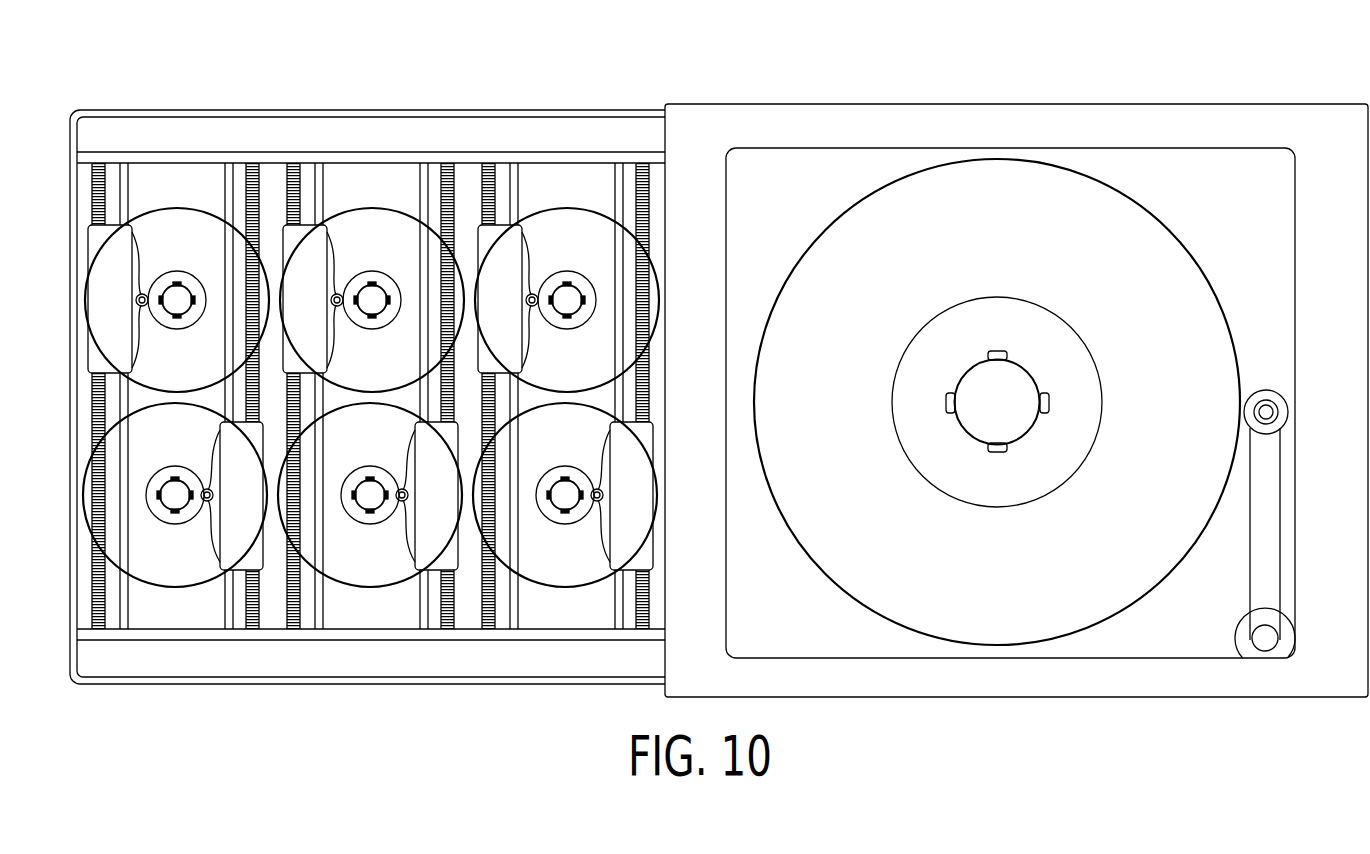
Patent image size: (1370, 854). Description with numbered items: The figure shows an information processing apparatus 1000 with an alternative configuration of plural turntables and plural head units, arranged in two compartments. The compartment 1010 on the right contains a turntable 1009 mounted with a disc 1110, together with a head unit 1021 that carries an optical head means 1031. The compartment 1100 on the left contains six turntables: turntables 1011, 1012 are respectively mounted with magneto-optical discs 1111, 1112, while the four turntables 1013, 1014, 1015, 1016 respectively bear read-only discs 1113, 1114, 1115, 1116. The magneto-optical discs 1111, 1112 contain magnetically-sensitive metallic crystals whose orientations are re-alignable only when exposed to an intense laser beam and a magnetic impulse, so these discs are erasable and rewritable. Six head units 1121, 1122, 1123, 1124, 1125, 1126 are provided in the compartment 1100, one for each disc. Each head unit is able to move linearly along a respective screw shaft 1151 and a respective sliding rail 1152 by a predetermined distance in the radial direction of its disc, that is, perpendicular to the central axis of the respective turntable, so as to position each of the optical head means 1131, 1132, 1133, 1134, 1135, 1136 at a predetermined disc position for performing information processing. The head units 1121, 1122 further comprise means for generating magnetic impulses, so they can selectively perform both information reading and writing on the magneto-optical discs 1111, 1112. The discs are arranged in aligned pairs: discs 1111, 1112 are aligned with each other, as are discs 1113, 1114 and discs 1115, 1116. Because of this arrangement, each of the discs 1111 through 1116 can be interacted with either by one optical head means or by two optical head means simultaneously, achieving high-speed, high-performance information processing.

The information processing apparatus 1000 is at (719, 348).
The compartment 1100 is at (390, 371).
The compartment 1010 is at (1016, 378).
The disc 1110 is at (1170, 230).
The turntable 1009 is at (1019, 360).
The optical head means 1031 is at (1270, 390).
The head unit 1021 is at (1243, 550).
The magneto-optical disc 1111 is at (188, 210).
The magneto-optical disc 1112 is at (150, 587).
The read-only disc 1113 is at (383, 210).
The read-only disc 1114 is at (345, 587).
The read-only disc 1115 is at (578, 210).
The read-only disc 1116 is at (540, 587).
The turntable 1011 is at (168, 287).
The turntable 1012 is at (168, 482).
The turntable 1013 is at (363, 287).
The turntable 1014 is at (363, 482).
The turntable 1015 is at (558, 287).
The turntable 1016 is at (558, 482).
The head unit 1121 is at (135, 240).
The head unit 1122 is at (222, 553).
The head unit 1123 is at (330, 240).
The head unit 1124 is at (417, 553).
The head unit 1125 is at (525, 240).
The head unit 1126 is at (612, 553).
The optical head means 1131 is at (144, 307).
The optical head means 1132 is at (206, 503).
The optical head means 1133 is at (339, 307).
The optical head means 1134 is at (401, 503).
The optical head means 1135 is at (534, 307).
The optical head means 1136 is at (596, 503).
The screw shaft 1151 is at (98, 164).
The sliding rail 1152 is at (122, 164).